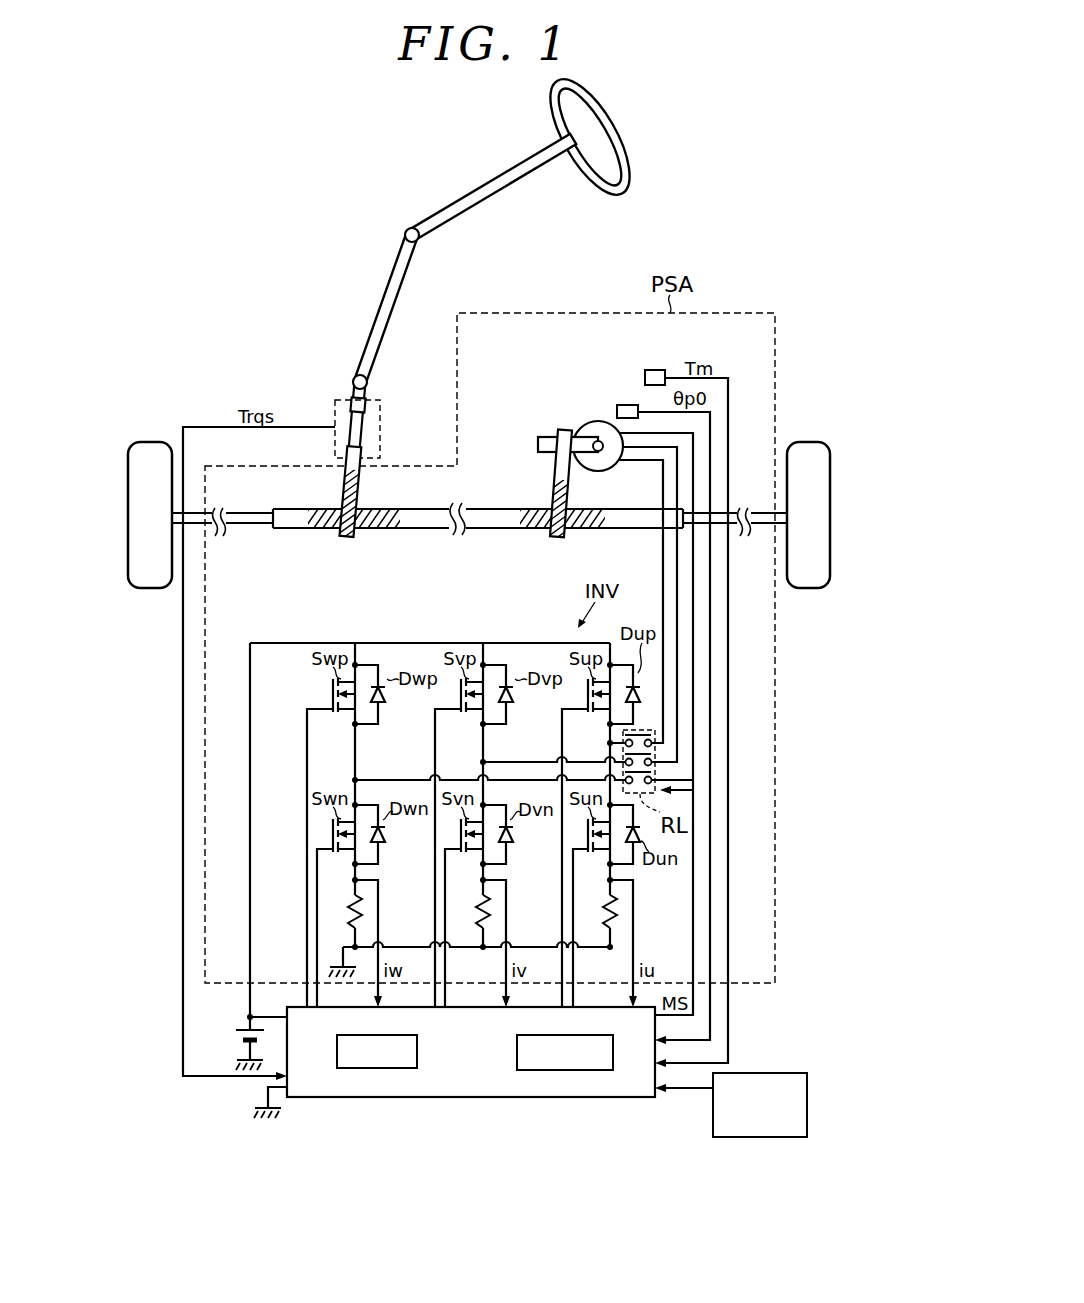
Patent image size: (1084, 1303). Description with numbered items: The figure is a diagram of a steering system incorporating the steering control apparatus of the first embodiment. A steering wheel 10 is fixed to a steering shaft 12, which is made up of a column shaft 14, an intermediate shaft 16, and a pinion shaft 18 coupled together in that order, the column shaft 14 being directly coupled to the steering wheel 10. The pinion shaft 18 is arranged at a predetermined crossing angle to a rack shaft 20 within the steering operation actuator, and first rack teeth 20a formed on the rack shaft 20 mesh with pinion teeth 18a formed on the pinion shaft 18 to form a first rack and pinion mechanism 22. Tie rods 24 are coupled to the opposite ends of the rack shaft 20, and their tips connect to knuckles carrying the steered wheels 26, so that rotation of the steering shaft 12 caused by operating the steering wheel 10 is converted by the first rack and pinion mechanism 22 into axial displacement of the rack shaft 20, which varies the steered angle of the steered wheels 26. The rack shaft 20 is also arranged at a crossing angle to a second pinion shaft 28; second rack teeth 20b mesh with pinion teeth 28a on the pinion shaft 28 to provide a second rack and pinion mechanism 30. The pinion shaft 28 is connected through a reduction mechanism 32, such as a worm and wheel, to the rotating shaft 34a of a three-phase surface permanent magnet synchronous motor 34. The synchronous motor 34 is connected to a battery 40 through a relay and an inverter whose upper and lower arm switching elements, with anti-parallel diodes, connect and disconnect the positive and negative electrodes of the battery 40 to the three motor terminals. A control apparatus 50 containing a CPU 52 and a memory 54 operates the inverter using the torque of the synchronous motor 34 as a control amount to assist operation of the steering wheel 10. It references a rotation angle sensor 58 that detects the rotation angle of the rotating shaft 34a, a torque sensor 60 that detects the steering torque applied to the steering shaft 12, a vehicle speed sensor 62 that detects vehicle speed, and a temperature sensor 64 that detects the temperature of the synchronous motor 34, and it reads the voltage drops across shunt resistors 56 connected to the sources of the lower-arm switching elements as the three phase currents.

The steering wheel 10 is at (585, 93).
The steering shaft 12 is at (313, 233).
The column shaft 14 is at (426, 228).
The intermediate shaft 16 is at (383, 322).
The pinion shaft 18 is at (355, 392).
The pinion teeth 18a is at (346, 500).
The rack shaft 20 is at (434, 509).
The first rack teeth 20a is at (373, 529).
The second rack teeth 20b is at (581, 530).
The first rack and pinion mechanism 22 is at (332, 542).
The tie rods 24 is at (234, 526).
The steered wheels 26 is at (149, 589).
The pinion shaft 28 is at (558, 461).
The pinion teeth 28a is at (553, 499).
The second rack and pinion mechanism 30 is at (542, 542).
The reduction mechanism 32 is at (540, 437).
The synchronous motor 34 is at (598, 421).
The rotating shaft 34a is at (598, 471).
The battery 40 is at (243, 1030).
The control apparatus 50 is at (477, 1066).
The CPU 52 is at (398, 1035).
The memory 54 is at (588, 1035).
The shunt resistors 56 is at (347, 912).
The rotation angle sensor 58 is at (628, 405).
The torque sensor 60 is at (392, 416).
The vehicle speed sensor 62 is at (760, 1073).
The temperature sensor 64 is at (655, 370).